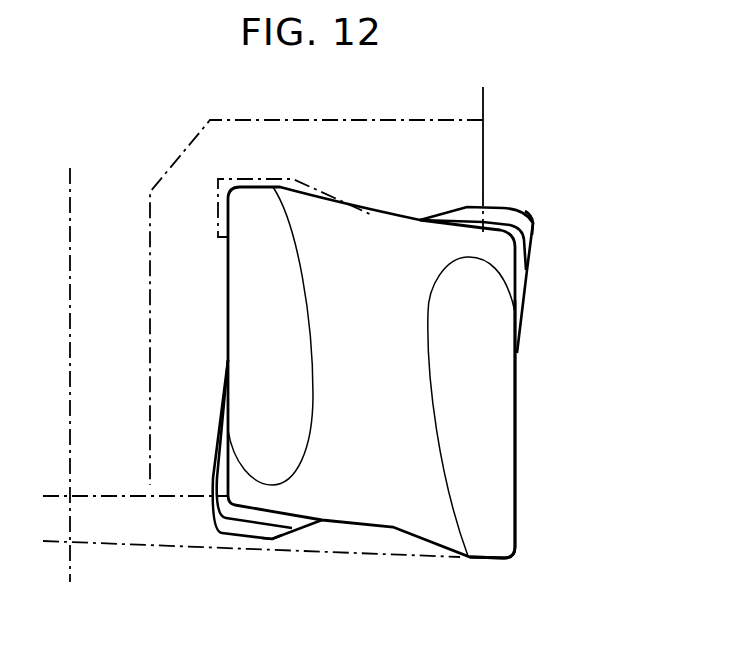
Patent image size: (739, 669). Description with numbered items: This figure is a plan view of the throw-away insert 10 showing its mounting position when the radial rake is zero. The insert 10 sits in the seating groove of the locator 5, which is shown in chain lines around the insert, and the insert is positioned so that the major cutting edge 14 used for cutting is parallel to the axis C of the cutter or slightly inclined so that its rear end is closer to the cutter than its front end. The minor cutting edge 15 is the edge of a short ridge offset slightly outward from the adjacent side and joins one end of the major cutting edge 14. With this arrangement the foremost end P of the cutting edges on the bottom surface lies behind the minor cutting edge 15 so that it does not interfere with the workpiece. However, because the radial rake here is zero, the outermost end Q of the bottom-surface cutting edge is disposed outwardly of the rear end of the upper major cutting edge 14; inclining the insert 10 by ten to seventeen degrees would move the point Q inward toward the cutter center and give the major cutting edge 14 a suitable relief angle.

The locator 5 is at (443, 165).
The throw-away insert 10 is at (532, 303).
The major cutting edge 14 is at (515, 469).
The minor cutting edge 15 is at (483, 560).
The axis of the cutter C is at (73, 349).
The foremost end of the cutting edges on the bottom surface P is at (272, 540).
The outermost end of the cutting edge on the bottom surface Q is at (533, 223).